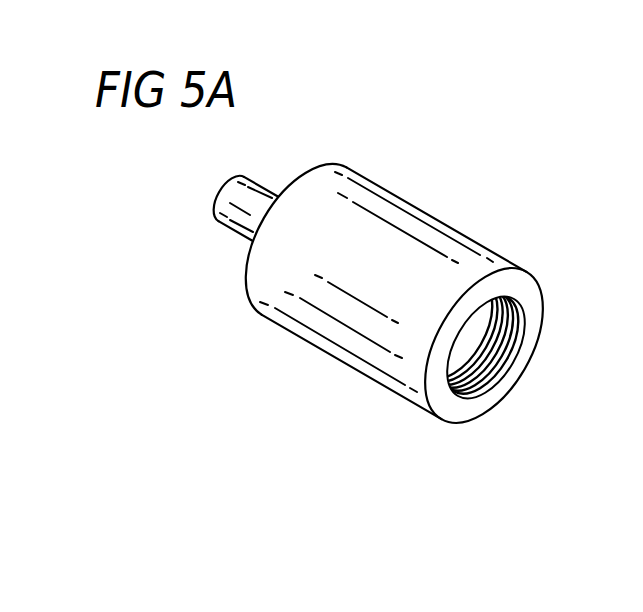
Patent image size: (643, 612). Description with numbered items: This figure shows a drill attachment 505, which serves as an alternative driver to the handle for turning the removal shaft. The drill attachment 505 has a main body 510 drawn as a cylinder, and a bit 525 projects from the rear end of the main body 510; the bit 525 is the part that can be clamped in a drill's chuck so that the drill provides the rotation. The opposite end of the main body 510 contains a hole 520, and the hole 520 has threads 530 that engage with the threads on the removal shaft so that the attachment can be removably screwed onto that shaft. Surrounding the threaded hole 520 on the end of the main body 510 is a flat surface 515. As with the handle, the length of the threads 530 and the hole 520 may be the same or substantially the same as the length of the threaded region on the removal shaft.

The drill attachment 505 is at (483, 135).
The main body 510 is at (310, 340).
The flat surface 515 is at (534, 303).
The hole 520 is at (533, 400).
The bit 525 is at (226, 223).
The threads 530 is at (481, 381).